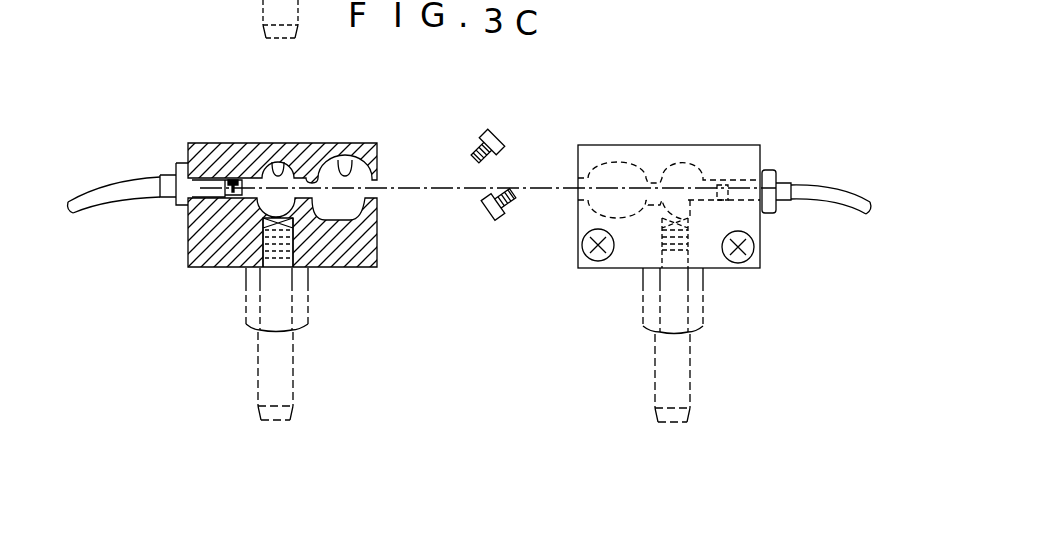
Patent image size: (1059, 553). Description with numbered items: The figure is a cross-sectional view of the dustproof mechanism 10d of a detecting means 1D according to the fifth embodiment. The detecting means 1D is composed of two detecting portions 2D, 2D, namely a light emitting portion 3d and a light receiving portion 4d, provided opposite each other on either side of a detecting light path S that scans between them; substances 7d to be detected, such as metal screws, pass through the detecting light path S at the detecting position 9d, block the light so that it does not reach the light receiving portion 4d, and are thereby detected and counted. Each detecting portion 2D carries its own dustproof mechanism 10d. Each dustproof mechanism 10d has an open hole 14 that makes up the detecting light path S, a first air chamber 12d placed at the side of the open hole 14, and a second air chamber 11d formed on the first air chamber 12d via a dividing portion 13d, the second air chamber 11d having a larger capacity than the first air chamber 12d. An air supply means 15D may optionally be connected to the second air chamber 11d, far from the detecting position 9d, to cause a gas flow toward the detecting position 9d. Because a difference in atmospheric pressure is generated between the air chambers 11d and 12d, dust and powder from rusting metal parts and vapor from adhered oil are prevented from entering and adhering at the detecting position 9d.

The detecting means 1D is at (262, 142).
The detecting portion 2D is at (232, 179).
The light emitting portion 3d is at (469, 234).
The light receiving portion 4d is at (707, 158).
The substance to be detected 7d is at (511, 193).
The detecting position 9d is at (471, 124).
The dustproof mechanism 10d is at (350, 203).
The second air chamber 11d is at (275, 165).
The first air chamber 12d is at (357, 162).
The dividing portion 13d is at (313, 174).
The open hole 14 is at (378, 192).
The air supply means 15D is at (241, 311).
The detecting light path S is at (402, 188).